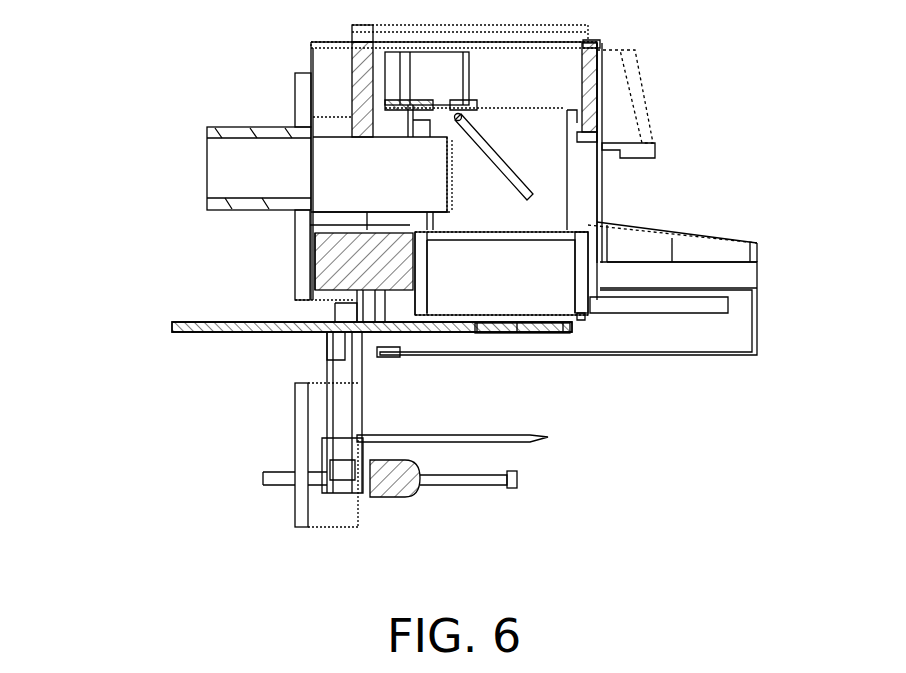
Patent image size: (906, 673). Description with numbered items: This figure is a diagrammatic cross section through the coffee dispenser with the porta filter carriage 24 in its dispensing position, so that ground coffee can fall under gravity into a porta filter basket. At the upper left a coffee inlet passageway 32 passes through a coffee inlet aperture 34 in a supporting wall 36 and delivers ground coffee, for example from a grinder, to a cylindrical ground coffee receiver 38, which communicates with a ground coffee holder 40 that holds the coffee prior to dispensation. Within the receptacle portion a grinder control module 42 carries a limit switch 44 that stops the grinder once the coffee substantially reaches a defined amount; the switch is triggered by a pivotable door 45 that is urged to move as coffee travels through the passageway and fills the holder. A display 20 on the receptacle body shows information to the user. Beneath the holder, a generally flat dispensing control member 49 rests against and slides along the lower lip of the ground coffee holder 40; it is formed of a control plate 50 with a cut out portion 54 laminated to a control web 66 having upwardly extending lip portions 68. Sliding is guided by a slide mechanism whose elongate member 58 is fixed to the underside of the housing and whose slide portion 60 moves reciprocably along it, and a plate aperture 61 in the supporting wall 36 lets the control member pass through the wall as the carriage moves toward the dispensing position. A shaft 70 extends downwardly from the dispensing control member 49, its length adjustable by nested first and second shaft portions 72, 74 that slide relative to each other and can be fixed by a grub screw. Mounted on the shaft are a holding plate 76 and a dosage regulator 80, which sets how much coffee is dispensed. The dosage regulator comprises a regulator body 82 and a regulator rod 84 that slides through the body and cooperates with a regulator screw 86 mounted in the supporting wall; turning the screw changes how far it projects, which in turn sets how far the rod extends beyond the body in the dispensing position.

The display 20 is at (650, 107).
The porta filter carriage 24 is at (137, 473).
The coffee inlet passageway 32 is at (222, 128).
The coffee inlet aperture 34 is at (290, 212).
The supporting wall 36 is at (298, 86).
The ground coffee receiver 38 is at (567, 183).
The ground coffee holder 40 is at (580, 277).
The grinder control module 42 is at (583, 70).
The limit switch 44 is at (463, 118).
The pivotable door 45 is at (488, 138).
The dispensing control member 49 is at (168, 327).
The control plate 50 is at (193, 332).
The cut out portion 54 is at (528, 325).
The elongate member 58 is at (705, 307).
The slide portion 60 is at (453, 315).
The plate aperture 61 is at (293, 300).
The control web 66 is at (339, 306).
The lip portions 68 is at (577, 318).
The shaft 70 is at (320, 364).
The first shaft portion 72 is at (360, 390).
The second shaft portion 74 is at (343, 403).
The holding plate 76 is at (452, 414).
The dosage regulator 80 is at (227, 528).
The regulator body 82 is at (397, 487).
The regulator rod 84 is at (488, 477).
The regulator screw 86 is at (272, 478).